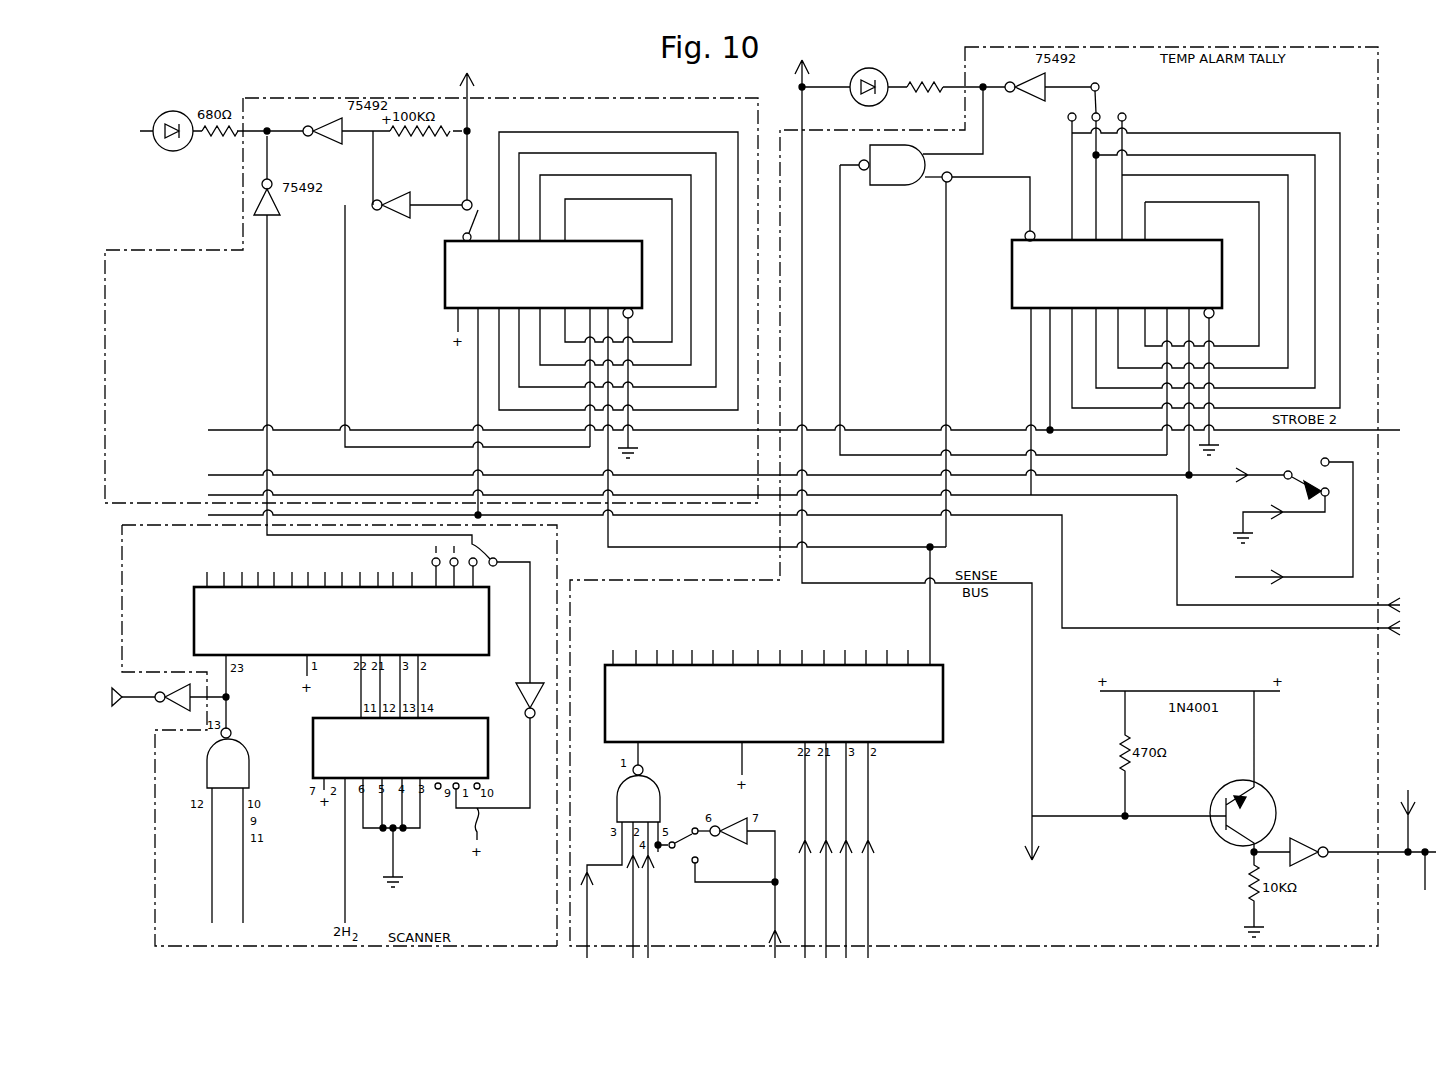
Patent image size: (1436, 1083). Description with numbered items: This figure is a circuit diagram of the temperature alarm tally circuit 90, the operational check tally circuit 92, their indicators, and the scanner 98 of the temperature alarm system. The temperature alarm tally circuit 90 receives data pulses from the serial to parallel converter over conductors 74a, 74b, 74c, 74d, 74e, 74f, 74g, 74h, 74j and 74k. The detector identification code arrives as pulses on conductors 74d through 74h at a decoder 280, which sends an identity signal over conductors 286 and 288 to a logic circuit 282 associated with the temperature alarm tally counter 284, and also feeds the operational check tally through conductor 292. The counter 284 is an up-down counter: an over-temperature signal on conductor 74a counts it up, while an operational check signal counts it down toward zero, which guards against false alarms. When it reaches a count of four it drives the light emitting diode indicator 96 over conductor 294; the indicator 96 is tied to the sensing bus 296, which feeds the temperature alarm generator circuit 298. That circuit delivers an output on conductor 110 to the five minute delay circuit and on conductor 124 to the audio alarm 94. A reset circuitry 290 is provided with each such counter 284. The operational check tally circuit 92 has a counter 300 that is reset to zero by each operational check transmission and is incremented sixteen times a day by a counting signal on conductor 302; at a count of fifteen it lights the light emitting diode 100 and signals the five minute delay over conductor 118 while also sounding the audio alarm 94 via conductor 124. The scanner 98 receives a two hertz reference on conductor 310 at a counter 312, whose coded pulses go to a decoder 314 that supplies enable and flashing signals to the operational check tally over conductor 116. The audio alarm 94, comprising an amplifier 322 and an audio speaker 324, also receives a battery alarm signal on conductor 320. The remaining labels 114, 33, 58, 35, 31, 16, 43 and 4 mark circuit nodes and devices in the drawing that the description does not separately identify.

The indicator light emitting diode 100 is at (168, 110).
The junction node 114 is at (260, 126).
The conductor 118 is at (939, 457).
The operational check tally circuit 92 is at (148, 252).
The conductor 116 is at (276, 336).
The counter 300 is at (445, 296).
The indicator 96 is at (864, 64).
The conductor 294 is at (947, 88).
The logic circuit 282 is at (887, 186).
The sensing bus 296 is at (803, 282).
The conductor 288 is at (948, 386).
The temperature alarm tally counter 284 is at (1012, 282).
The temperature alarm tally circuit 90 is at (1378, 284).
The conductor 74k is at (1322, 436).
The conductor 292 is at (845, 548).
The conductor 302 is at (1000, 521).
The conductor 286 is at (935, 612).
The reset circuitry 290 is at (1233, 525).
The conductor 74a is at (1322, 606).
The decoder 314 is at (489, 638).
The decoder 33 is at (338, 594).
The amplifier 322 is at (174, 689).
The audio speaker 324 is at (120, 707).
The audio alarm 94 is at (138, 727).
The counter 312 is at (313, 756).
The conductor 310 is at (344, 878).
The conductor 320 is at (212, 859).
The conductor 124 is at (243, 858).
The scanner 98 is at (155, 880).
The decoder 280 is at (920, 744).
The decoder 58 is at (777, 675).
The conductor 74j is at (602, 859).
The conductor 74b is at (628, 962).
The conductor 74c is at (652, 958).
The conductor 74d is at (770, 948).
The conductor 74e is at (805, 950).
The conductor 74f is at (828, 950).
The conductor 74g is at (846, 938).
The conductor 74h is at (868, 900).
The temperature alarm generator circuit 298 is at (1294, 772).
The conductor 110 is at (1407, 856).
The NAND gate 4012 35 is at (433, 775).
The inverter 31 is at (532, 693).
The inverter 16 is at (172, 697).
The inverter 43 is at (701, 835).
The inverter 4 is at (1291, 848).